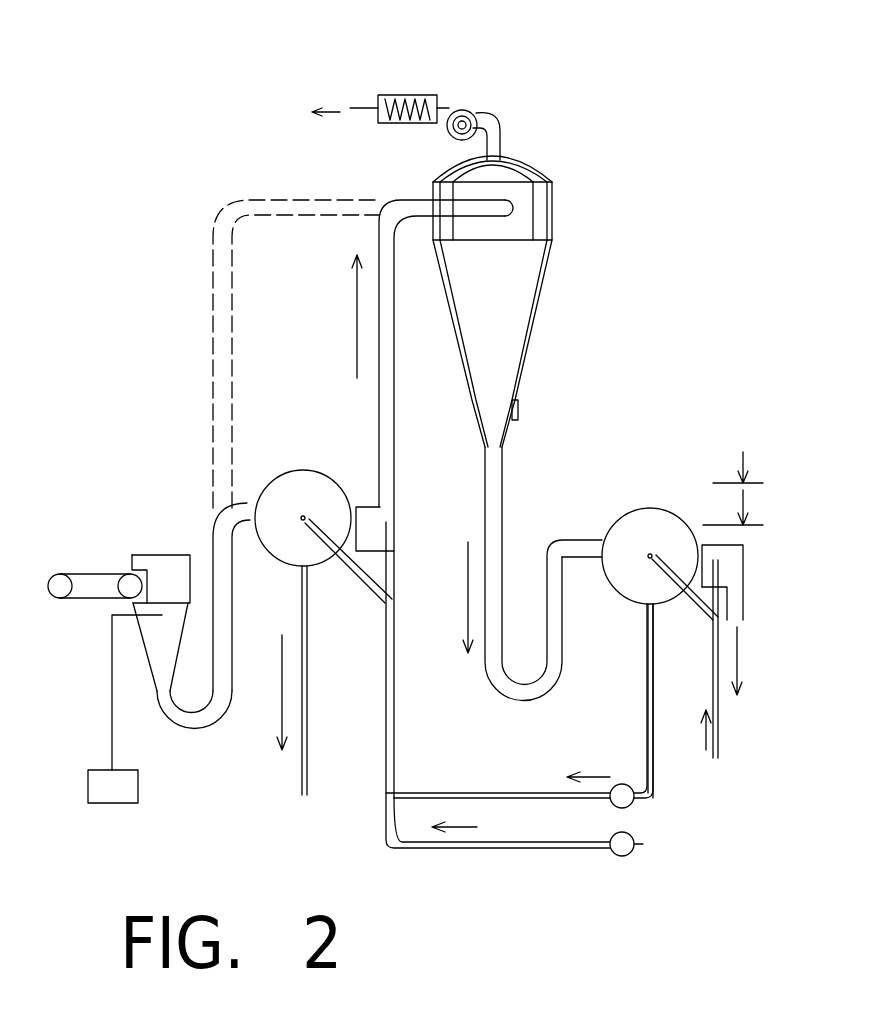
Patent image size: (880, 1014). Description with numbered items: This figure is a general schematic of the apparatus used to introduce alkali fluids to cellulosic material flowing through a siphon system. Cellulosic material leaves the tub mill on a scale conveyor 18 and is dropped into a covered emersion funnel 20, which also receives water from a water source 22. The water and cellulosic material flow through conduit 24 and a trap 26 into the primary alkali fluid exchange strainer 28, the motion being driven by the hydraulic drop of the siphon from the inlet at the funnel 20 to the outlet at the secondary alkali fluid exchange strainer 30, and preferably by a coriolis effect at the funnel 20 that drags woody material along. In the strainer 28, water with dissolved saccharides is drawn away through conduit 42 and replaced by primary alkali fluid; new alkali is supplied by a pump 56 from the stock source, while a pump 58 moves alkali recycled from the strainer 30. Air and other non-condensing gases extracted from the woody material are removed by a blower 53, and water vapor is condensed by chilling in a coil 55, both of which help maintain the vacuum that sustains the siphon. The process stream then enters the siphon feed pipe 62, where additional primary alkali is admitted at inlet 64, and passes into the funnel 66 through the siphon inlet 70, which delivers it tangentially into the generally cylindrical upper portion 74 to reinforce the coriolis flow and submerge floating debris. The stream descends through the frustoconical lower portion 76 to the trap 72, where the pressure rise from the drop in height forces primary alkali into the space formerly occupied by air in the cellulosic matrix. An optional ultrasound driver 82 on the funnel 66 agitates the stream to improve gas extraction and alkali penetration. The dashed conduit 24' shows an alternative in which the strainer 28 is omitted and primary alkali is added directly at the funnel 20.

The scale conveyor 18 is at (97, 572).
The covered emersion funnel 20 is at (137, 643).
The water source 22 is at (102, 778).
The conduit 24 is at (206, 641).
The conduit 24' is at (263, 354).
The trap 26 is at (203, 730).
The primary alkali fluid exchange strainer 28 is at (263, 473).
The secondary alkali fluid exchange strainer 30 is at (617, 517).
The conduit 42 is at (308, 700).
The blower 53 is at (463, 110).
The coil 55 is at (412, 92).
The pump 56 is at (627, 860).
The pump 58 is at (623, 783).
The siphon feed pipe 62 is at (397, 422).
The inlet 64 is at (385, 527).
The funnel 66 is at (561, 248).
The siphon inlet 70 is at (492, 207).
The trap 72 is at (540, 697).
The cylindrical upper portion 74 is at (552, 208).
The frustoconical lower portion 76 is at (498, 333).
The ultrasound driver 82 is at (518, 412).